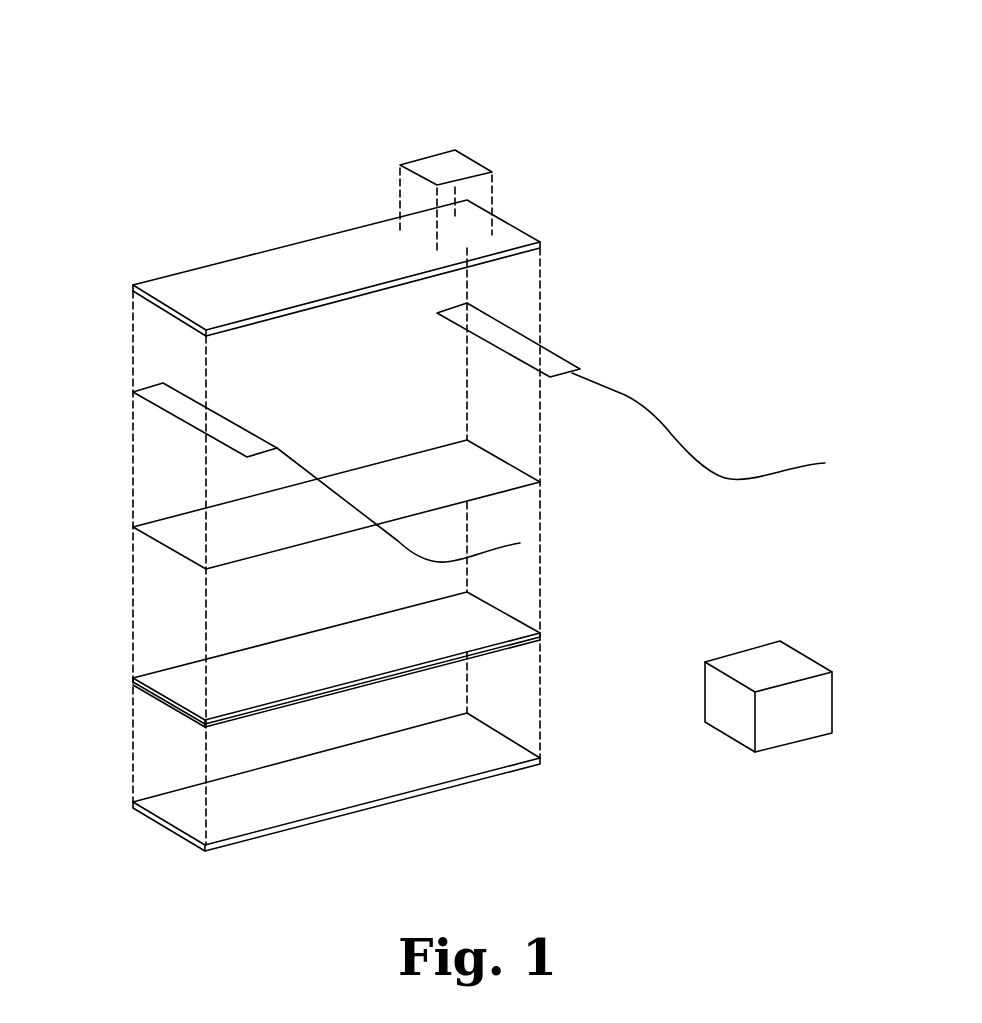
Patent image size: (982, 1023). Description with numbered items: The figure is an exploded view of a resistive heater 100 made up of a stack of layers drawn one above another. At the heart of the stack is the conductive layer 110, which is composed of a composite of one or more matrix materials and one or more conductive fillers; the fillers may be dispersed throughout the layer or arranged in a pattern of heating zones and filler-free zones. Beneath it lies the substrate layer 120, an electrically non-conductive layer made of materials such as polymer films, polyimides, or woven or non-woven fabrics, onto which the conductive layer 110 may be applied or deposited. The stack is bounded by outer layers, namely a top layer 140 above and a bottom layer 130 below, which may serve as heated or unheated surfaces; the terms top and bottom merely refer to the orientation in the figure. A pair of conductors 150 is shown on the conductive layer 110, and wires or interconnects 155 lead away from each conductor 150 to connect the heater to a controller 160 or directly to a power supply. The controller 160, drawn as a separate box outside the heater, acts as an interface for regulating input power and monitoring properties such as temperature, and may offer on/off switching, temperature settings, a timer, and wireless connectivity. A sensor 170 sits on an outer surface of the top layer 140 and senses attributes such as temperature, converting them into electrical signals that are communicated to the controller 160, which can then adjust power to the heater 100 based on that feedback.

The heater 100 is at (154, 92).
The conductive layer 110 is at (160, 543).
The substrate layer 120 is at (183, 664).
The bottom layer 130 is at (167, 827).
The top layer 140 is at (212, 265).
The conductors 150 is at (165, 410).
The interconnects 155 is at (450, 563).
The controller 160 is at (805, 658).
The sensor 170 is at (463, 155).